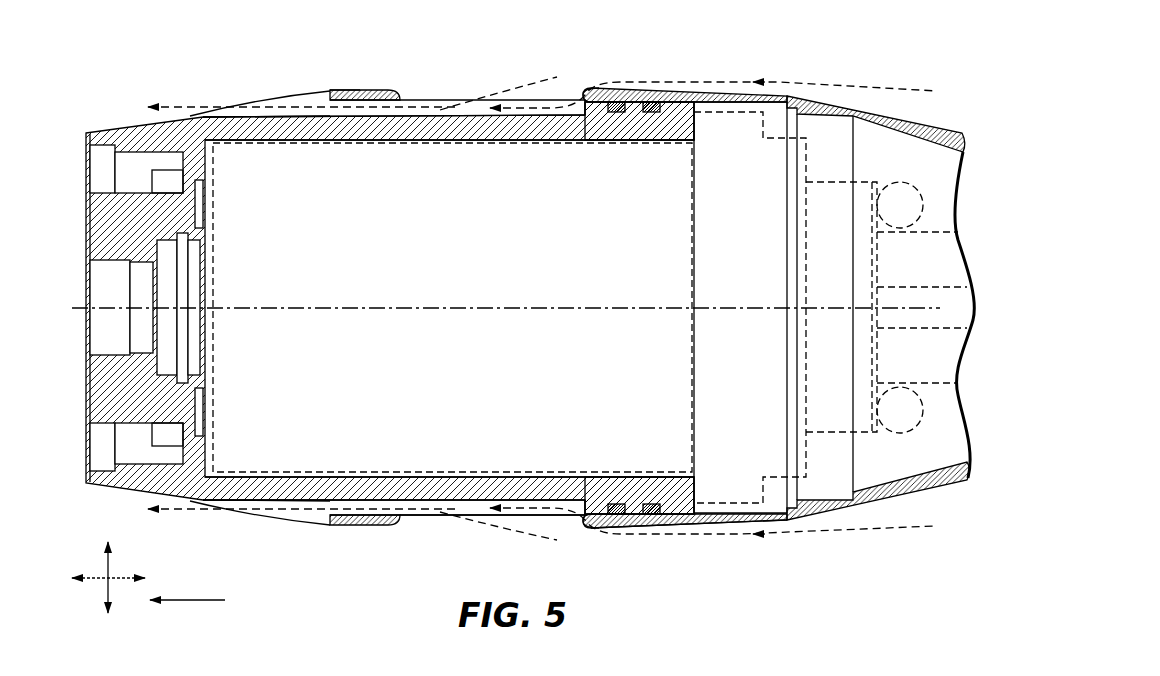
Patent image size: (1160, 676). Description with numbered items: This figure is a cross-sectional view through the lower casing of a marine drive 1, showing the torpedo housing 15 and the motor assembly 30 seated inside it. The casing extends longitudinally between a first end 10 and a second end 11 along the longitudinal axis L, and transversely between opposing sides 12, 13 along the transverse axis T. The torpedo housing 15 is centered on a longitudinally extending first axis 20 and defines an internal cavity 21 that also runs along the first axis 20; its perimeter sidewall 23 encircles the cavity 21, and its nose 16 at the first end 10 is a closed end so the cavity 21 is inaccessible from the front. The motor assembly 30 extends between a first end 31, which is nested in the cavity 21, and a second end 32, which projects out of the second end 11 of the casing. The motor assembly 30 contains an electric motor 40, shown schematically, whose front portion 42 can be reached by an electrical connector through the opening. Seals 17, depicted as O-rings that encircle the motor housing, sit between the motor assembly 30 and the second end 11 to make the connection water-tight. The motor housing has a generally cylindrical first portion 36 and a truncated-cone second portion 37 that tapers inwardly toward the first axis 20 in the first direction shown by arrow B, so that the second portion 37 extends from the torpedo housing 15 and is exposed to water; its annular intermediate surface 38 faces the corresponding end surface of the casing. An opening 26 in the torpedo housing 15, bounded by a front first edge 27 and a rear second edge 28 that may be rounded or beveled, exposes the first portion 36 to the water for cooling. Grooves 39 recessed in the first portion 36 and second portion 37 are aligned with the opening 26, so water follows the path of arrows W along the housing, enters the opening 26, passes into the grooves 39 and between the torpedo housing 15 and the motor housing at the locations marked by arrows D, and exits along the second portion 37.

The marine drive 1 is at (99, 108).
The first end 10 is at (962, 86).
The second end 11 is at (357, 557).
The side 12 is at (704, 548).
The side 13 is at (676, 72).
The torpedo housing 15 is at (730, 527).
The nose 16 is at (934, 133).
The seals 17 is at (614, 100).
The first axis 20 is at (292, 305).
The cavity 21 is at (868, 454).
The perimeter sidewall 23 is at (707, 93).
The opening 26 is at (440, 92).
The first edge 27 is at (582, 97).
The second edge 28 is at (406, 99).
The motor assembly 30 is at (170, 90).
The first end 31 is at (662, 543).
The second end 32 is at (140, 515).
The first portion 36 is at (547, 128).
The second portion 37 is at (263, 487).
The intermediate surface 38 is at (345, 95).
The grooves 39 is at (280, 97).
The electric motor 40 is at (195, 397).
The front portion 42 is at (878, 163).
The arrows W is at (193, 104).
The arrows D is at (360, 93).
The transverse axis T is at (104, 560).
The longitudinal axis L is at (90, 583).
The arrow B is at (180, 601).